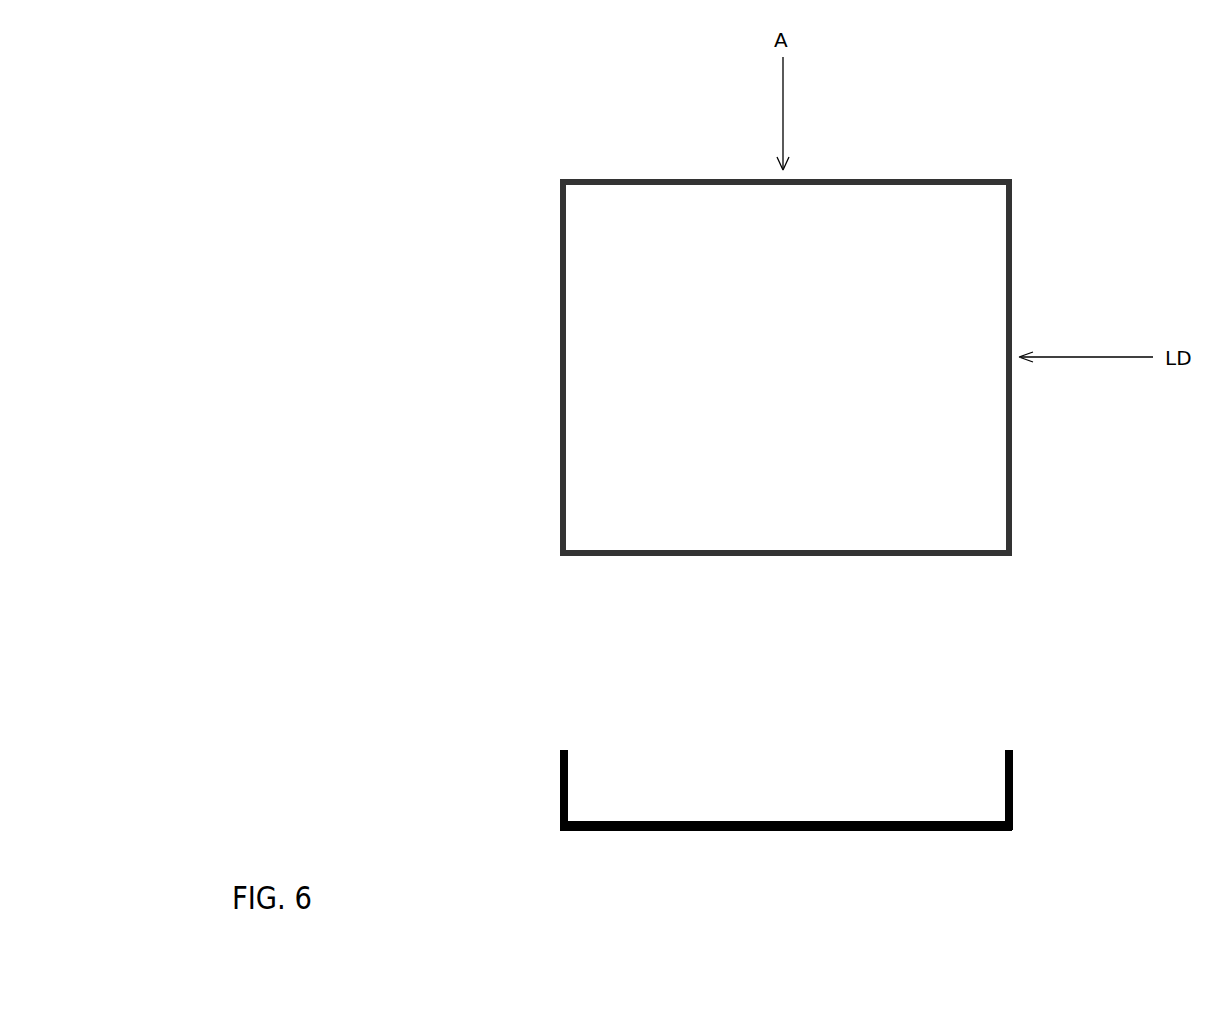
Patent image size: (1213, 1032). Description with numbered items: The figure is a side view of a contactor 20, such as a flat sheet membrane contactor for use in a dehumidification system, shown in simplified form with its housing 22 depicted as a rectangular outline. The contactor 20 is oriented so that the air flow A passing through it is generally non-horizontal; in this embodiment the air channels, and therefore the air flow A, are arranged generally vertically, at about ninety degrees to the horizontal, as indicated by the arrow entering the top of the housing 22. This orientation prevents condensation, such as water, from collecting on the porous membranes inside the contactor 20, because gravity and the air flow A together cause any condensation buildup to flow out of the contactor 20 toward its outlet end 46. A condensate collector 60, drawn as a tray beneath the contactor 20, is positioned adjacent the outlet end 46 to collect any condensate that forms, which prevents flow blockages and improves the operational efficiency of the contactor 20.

The contactor 20 is at (1045, 154).
The housing 22 is at (563, 312).
The outlet end 46 is at (965, 553).
The condensate collector 60 is at (1012, 778).